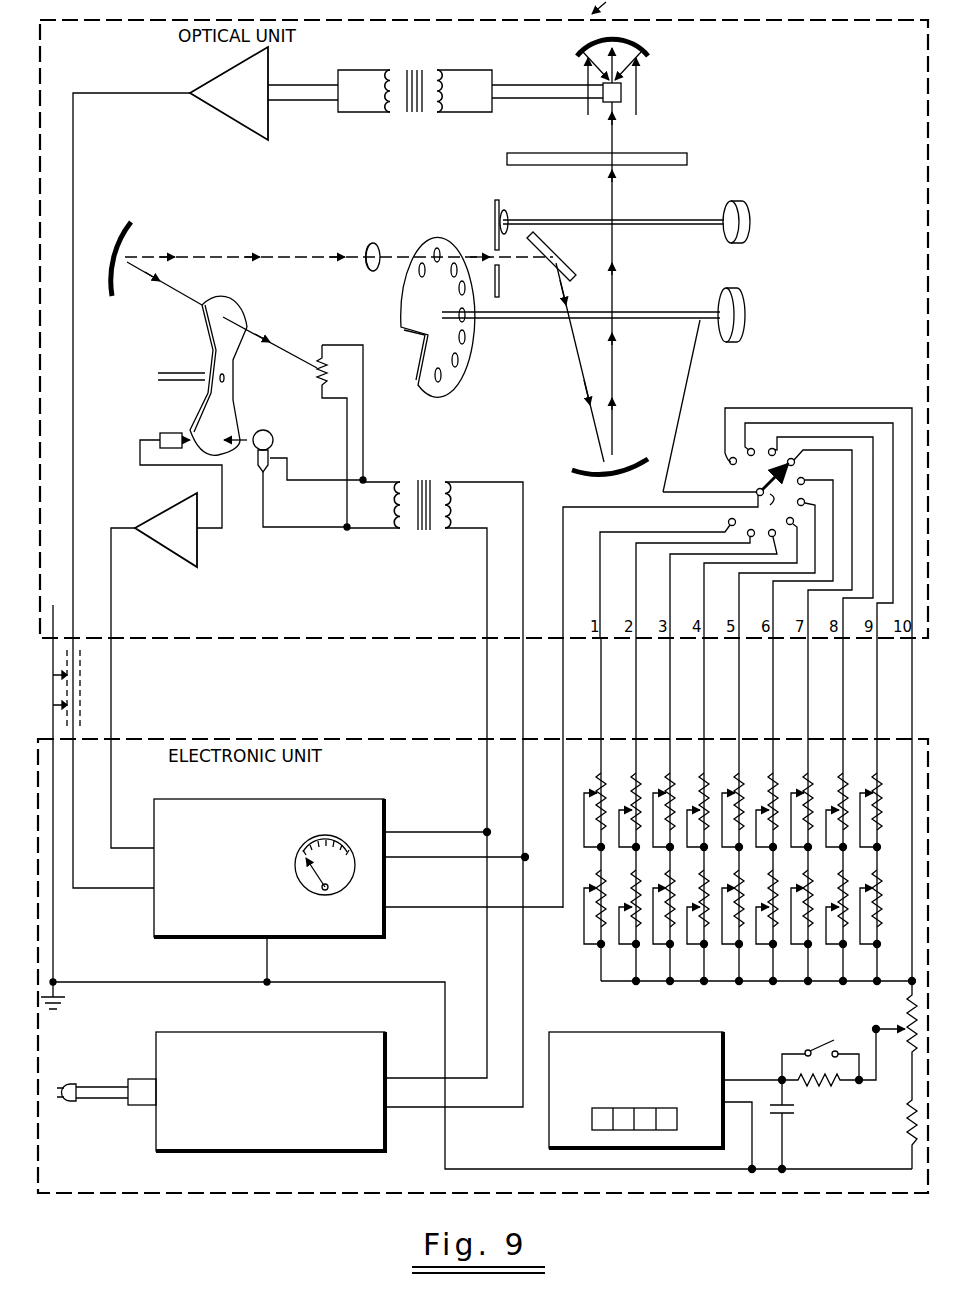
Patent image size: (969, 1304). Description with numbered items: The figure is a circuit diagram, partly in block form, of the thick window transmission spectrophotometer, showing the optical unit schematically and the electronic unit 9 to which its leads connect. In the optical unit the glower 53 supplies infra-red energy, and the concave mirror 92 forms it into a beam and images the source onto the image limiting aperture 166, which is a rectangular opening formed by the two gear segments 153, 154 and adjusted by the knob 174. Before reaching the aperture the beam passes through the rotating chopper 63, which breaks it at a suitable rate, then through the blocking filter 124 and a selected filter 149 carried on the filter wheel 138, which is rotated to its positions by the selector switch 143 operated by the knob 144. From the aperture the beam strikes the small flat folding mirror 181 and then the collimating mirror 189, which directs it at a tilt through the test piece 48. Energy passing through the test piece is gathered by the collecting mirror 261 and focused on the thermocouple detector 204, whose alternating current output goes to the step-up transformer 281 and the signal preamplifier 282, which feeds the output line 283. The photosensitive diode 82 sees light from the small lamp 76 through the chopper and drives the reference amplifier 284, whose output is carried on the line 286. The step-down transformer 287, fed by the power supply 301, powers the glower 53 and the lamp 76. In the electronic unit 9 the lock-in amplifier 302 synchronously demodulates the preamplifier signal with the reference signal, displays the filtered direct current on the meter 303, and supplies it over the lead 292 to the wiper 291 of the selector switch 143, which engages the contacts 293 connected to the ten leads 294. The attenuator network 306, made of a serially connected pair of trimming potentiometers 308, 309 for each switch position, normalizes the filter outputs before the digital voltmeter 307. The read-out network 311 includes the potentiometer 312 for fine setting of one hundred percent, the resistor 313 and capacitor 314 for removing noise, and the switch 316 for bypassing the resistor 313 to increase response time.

The electronic unit 9 is at (389, 737).
The collecting mirror 261 is at (645, 45).
The thermocouple detector 204 is at (621, 92).
The signal preamplifier 282 is at (235, 112).
The step-up transformer 281 is at (413, 113).
The test piece 48 is at (690, 158).
The concave mirror 92 is at (128, 222).
The blocking filter 124 is at (378, 245).
The gear segment 153 is at (494, 205).
The image limiting aperture 166 is at (497, 245).
The knob 174 is at (750, 222).
The folding mirror 181 is at (558, 258).
The gear segment 154 is at (499, 290).
The knob 144 is at (745, 315).
The rotating chopper 63 is at (215, 332).
The glower 53 is at (318, 357).
The filter 149 is at (460, 362).
The filter wheel 138 is at (450, 385).
The output line 283 is at (75, 450).
The photosensitive diode 82 is at (175, 408).
The lamp 76 is at (275, 440).
The collimating mirror 189 is at (585, 475).
The contacts 293 is at (740, 465).
The selector switch 143 is at (752, 483).
The wiper 291 is at (776, 511).
The step-down transformer 287 is at (422, 530).
The reference amplifier 284 is at (180, 555).
The line 286 is at (112, 612).
The lead 292 is at (565, 615).
The leads 294 is at (618, 560).
The lock-in amplifier 302 is at (350, 805).
The meter 303 is at (345, 888).
The trimming potentiometer 308 is at (603, 795).
The trimming potentiometer 309 is at (603, 892).
The attenuator network 306 is at (727, 811).
The power supply 301 is at (335, 1038).
The digital voltmeter 307 is at (665, 1035).
The read-out network 311 is at (832, 1077).
The potentiometer 312 is at (900, 1015).
The switch 316 is at (800, 1045).
The resistor 313 is at (832, 1088).
The capacitor 314 is at (795, 1109).